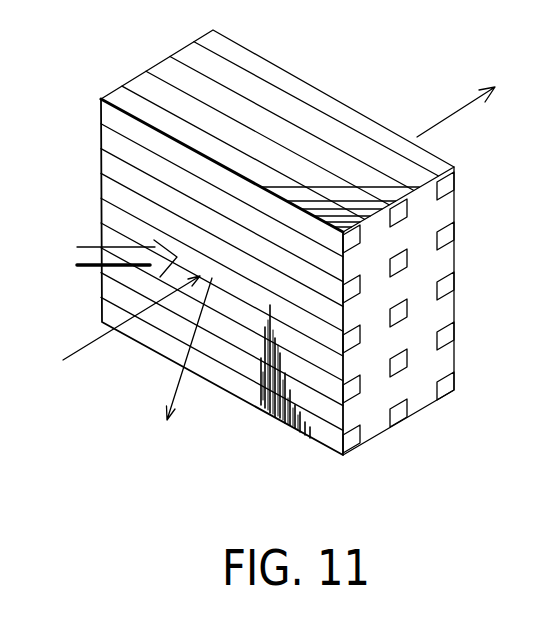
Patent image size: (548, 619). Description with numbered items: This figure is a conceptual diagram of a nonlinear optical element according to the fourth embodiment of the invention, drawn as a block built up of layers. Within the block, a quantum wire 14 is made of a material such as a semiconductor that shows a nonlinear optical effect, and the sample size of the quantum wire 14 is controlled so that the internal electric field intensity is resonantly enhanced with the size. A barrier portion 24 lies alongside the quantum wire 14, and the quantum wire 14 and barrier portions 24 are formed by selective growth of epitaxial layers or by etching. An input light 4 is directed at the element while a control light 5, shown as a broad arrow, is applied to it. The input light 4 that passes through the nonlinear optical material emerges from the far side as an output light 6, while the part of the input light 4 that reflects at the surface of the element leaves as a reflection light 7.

The barrier portion 24 is at (107, 138).
The quantum wire 14 is at (108, 214).
The control light 5 is at (80, 247).
The input light 4 is at (82, 347).
The output light 6 is at (443, 120).
The reflection light 7 is at (178, 388).